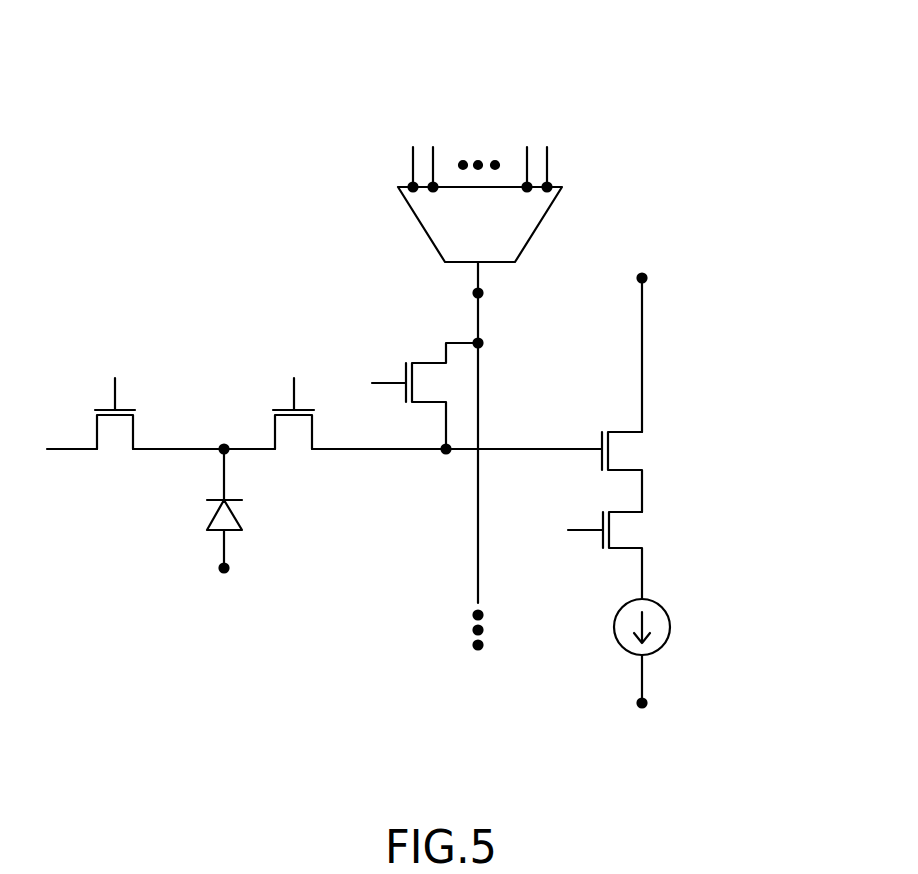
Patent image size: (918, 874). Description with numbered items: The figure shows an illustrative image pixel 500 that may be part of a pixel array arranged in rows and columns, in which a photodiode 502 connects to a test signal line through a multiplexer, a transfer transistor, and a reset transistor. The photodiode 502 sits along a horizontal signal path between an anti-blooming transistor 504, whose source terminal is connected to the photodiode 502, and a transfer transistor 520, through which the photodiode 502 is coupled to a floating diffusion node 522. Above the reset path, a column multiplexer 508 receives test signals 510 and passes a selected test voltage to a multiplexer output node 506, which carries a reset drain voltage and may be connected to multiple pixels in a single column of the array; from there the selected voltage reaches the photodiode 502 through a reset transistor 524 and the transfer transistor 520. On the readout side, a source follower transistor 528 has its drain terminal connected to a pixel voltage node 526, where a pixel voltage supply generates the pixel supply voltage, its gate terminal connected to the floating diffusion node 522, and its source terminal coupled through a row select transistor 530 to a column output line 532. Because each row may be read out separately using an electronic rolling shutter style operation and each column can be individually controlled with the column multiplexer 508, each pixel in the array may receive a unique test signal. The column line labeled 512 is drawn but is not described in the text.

The image pixel 500 is at (693, 139).
The photodiode 502 is at (210, 520).
The anti-blooming transistor 504 is at (95, 437).
The multiplexer output node 506 is at (481, 296).
The column multiplexer 508 is at (536, 225).
The test signals 510 is at (548, 160).
The column output line 512 is at (477, 578).
The transfer transistor 520 is at (272, 437).
The floating diffusion node 522 is at (443, 453).
The reset transistor 524 is at (435, 362).
The pixel voltage node 526 is at (645, 278).
The source follower transistor 528 is at (623, 430).
The row select transistor 530 is at (625, 551).
The column output line 532 is at (645, 577).